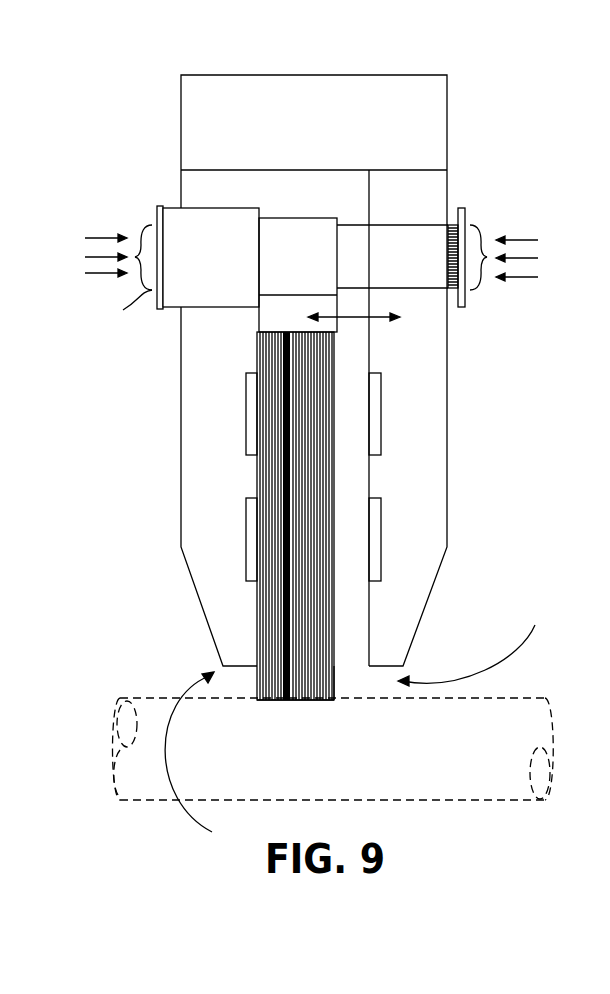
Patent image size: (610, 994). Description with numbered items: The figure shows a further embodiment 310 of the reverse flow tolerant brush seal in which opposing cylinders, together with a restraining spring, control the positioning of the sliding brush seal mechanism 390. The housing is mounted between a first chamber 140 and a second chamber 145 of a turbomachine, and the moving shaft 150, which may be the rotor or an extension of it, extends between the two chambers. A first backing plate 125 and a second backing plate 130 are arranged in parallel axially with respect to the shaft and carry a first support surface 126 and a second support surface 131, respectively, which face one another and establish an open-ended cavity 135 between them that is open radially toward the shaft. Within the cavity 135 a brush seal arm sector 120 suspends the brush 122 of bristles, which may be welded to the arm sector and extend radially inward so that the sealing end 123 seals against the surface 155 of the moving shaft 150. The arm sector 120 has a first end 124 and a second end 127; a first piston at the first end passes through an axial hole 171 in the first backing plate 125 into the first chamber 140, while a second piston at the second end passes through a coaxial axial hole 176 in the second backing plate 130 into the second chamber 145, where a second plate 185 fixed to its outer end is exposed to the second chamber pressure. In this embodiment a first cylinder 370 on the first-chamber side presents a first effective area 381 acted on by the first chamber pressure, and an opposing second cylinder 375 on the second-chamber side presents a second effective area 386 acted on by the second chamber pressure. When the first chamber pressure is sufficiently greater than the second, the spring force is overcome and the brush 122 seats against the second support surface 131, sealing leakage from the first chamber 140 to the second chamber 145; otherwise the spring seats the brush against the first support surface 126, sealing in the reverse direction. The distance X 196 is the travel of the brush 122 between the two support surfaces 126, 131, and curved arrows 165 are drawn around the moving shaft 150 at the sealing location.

The fluid control system 310 is at (337, 42).
The first end member 370 is at (187, 230).
The axial hole in the first backing plate 171 is at (204, 207).
The first end of the arm sector 124 is at (257, 240).
The sliding brush seal mechanism 390 is at (304, 186).
The brush seal arm sector 120 is at (312, 232).
The second end of the arm sector 127 is at (342, 248).
The axial hole in the second backing plate 176 is at (418, 227).
The second end member 375 is at (430, 240).
The second plate 185 is at (455, 305).
The travel X 196 is at (353, 317).
The second effective area A2eff 386 is at (478, 224).
The first effective area A1eff 381 is at (118, 295).
The first chamber 140 is at (119, 409).
The second chamber 145 is at (594, 407).
The first backing plate 125 is at (200, 497).
The first support surface 126 is at (257, 478).
The second backing plate 130 is at (427, 433).
The second support surface 131 is at (370, 465).
The open-ended cavity 135 is at (358, 617).
The brush 122 is at (287, 600).
The sealing end of the brush 123 is at (282, 700).
The surface of the moving shaft 155 is at (327, 717).
The fluid flow 165 is at (512, 654).
The moving shaft 150 is at (495, 783).